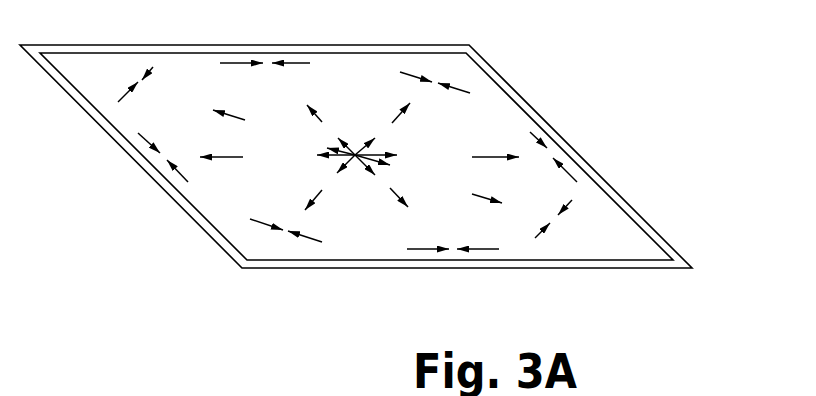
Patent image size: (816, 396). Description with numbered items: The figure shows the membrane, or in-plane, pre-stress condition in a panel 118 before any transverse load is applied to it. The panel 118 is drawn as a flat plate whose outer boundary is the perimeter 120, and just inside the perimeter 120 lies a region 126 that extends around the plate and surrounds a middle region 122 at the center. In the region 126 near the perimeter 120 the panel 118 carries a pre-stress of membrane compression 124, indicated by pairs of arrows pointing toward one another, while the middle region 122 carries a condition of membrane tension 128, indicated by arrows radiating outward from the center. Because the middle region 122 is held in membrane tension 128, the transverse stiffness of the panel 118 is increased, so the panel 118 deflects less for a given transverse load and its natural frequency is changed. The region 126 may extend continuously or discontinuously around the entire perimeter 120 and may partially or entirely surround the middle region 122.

The panel 118 is at (391, 179).
The perimeter 120 is at (636, 218).
The middle region 122 is at (247, 181).
The membrane compression 124 is at (565, 230).
The region 126 is at (631, 241).
The membrane tension 128 is at (425, 144).